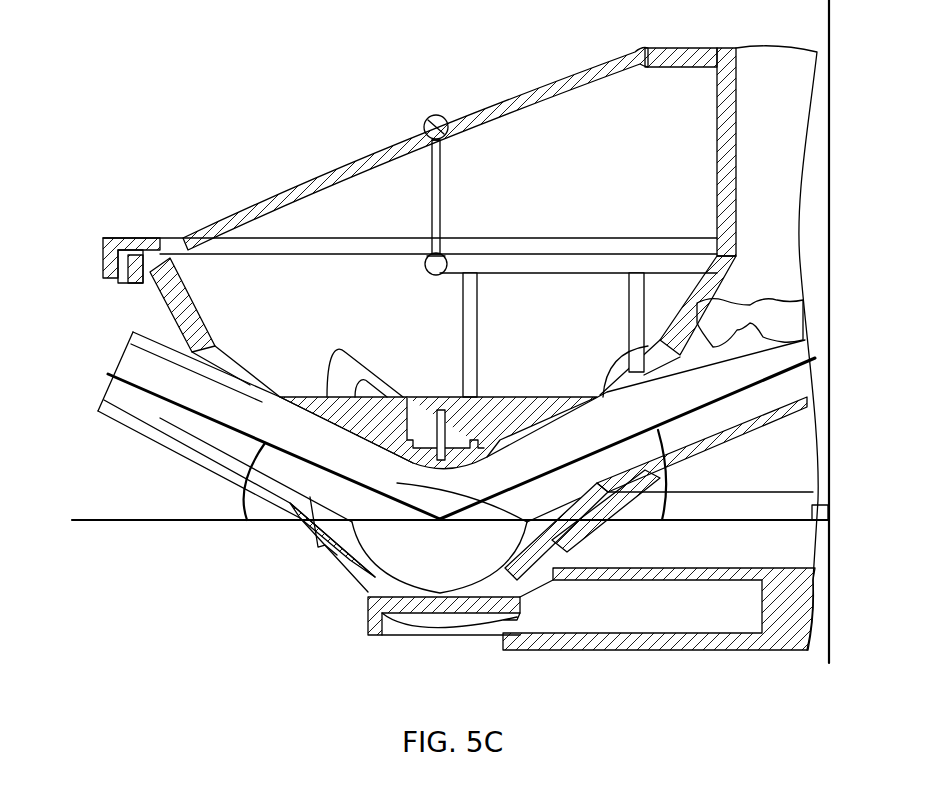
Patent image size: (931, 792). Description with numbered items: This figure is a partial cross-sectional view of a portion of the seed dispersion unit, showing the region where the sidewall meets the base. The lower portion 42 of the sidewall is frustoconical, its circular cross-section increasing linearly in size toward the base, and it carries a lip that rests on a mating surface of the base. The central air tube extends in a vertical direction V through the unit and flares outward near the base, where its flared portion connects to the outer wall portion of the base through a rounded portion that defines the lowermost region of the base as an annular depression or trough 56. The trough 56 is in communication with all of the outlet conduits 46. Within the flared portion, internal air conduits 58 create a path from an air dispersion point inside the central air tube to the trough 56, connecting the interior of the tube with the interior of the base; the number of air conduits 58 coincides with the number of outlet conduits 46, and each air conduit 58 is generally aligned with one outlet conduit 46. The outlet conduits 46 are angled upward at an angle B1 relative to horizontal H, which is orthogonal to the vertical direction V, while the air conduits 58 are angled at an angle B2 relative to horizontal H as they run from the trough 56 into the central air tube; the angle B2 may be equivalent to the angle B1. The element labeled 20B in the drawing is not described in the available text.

The lower portion 42 is at (308, 183).
The outlet conduit 46 is at (115, 420).
The internal air conduit 58 is at (771, 420).
The trough 56 is at (388, 578).
The lower wall 20B is at (337, 555).
The angle B1 is at (243, 497).
The angle B2 is at (668, 478).
The horizontal H is at (102, 525).
The vertical direction V is at (828, 18).